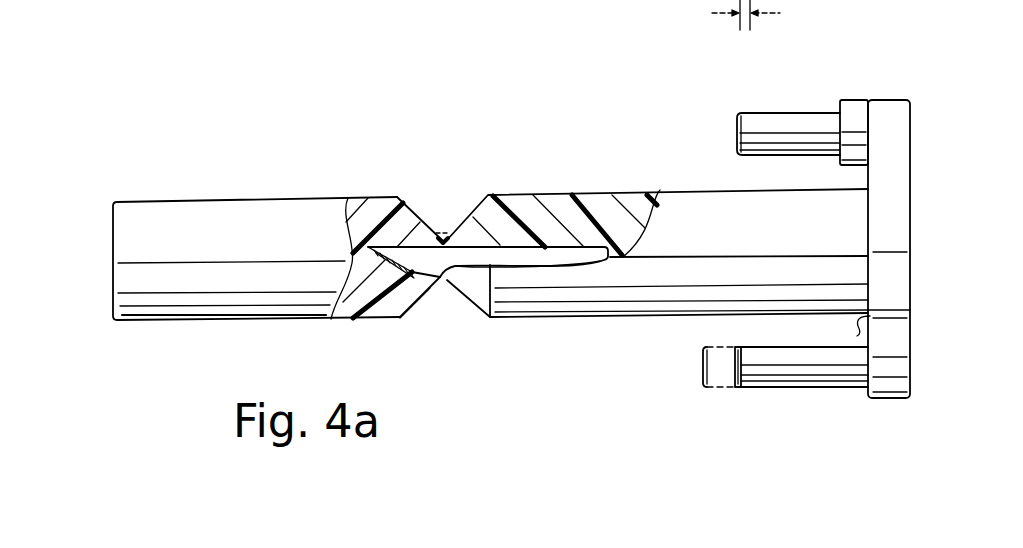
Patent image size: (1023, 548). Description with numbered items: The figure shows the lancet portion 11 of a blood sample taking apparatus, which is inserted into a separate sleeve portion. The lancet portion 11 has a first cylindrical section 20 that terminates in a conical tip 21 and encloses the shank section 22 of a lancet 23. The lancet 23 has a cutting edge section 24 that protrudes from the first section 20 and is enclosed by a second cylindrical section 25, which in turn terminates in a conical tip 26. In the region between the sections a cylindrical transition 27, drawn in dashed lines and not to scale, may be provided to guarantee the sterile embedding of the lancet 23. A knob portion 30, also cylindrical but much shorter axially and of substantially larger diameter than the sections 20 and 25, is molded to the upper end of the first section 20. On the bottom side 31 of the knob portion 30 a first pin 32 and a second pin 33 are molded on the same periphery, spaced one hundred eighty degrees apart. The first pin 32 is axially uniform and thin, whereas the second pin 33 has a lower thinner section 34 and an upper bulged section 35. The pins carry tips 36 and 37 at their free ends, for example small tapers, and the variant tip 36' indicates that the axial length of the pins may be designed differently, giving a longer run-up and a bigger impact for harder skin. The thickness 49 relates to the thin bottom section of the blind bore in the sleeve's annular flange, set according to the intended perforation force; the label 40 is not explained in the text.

The lancet portion 11 is at (343, 160).
The first cylindrical section 20 is at (715, 228).
The conical tip 21 is at (470, 232).
The shank section 22 is at (585, 258).
The lancet 23 is at (553, 240).
The cutting edge section 24 is at (420, 278).
The second cylindrical section 25 is at (218, 200).
The conical tip 26 is at (413, 200).
The cylindrical transition 27 is at (441, 279).
The knob portion 30 is at (893, 168).
The bottom side 31 is at (875, 318).
The first pin 32 is at (800, 367).
The second pin 33 is at (758, 102).
The lower thinner section 34 is at (806, 110).
The upper bulged section 35 is at (863, 100).
The tip 36 is at (713, 407).
The tip of first variant 36' is at (674, 401).
The tip 37 is at (735, 125).
The axis 40 is at (435, 7).
The thickness 49 is at (752, 27).